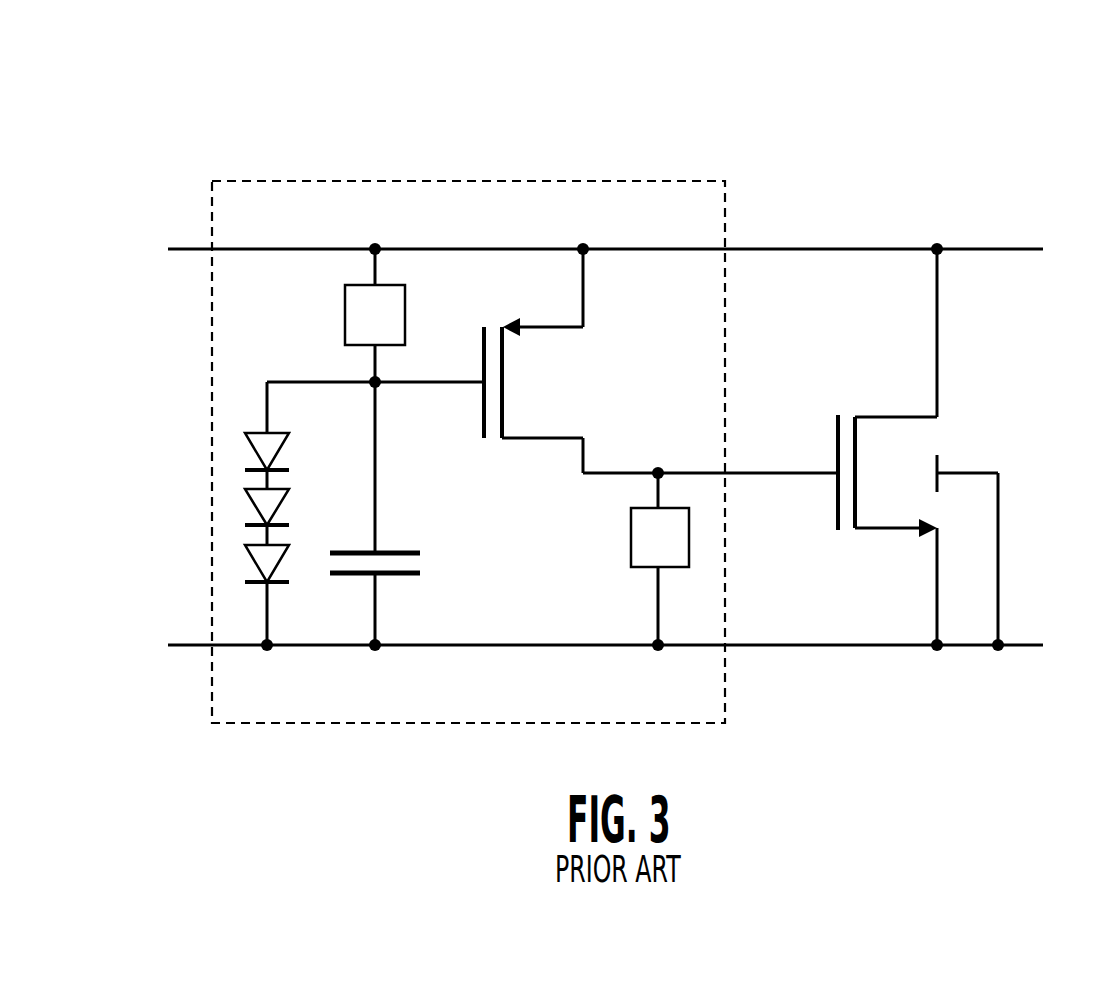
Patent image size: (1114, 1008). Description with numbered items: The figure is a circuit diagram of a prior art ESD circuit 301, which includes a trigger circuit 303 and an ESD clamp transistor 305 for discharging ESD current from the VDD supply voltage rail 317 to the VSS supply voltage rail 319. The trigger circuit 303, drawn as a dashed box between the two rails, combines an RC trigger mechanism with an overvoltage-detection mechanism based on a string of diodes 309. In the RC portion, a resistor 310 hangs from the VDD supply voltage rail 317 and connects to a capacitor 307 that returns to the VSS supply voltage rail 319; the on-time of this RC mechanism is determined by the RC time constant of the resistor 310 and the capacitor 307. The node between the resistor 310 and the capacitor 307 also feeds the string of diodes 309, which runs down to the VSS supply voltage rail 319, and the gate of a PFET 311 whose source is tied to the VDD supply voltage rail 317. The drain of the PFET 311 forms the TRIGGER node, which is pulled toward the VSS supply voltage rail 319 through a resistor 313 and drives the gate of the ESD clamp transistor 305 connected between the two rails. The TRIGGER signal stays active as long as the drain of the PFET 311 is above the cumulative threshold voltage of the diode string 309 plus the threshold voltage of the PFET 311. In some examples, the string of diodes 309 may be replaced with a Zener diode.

The ESD circuit 301 is at (124, 124).
The trigger circuit 303 is at (622, 181).
The ESD clamp transistor 305 is at (858, 455).
The capacitor 307 is at (395, 553).
The string of diodes 309 is at (289, 497).
The resistor 310 is at (405, 322).
The PFET 311 is at (502, 385).
The resistor 313 is at (631, 540).
The VDD supply voltage rail 317 is at (912, 249).
The VSS supply voltage rail 319 is at (912, 645).